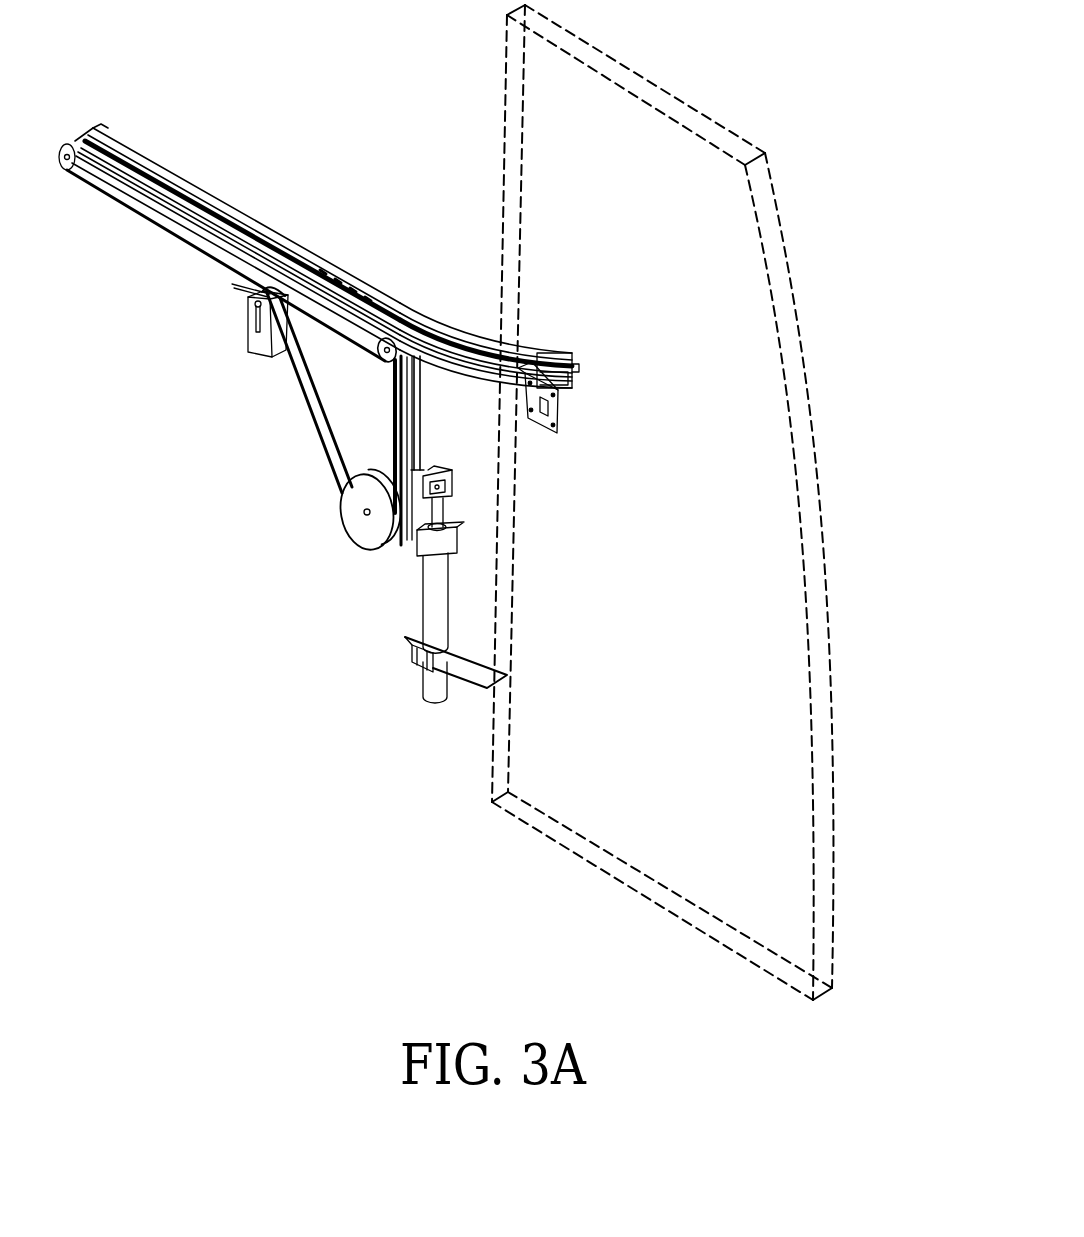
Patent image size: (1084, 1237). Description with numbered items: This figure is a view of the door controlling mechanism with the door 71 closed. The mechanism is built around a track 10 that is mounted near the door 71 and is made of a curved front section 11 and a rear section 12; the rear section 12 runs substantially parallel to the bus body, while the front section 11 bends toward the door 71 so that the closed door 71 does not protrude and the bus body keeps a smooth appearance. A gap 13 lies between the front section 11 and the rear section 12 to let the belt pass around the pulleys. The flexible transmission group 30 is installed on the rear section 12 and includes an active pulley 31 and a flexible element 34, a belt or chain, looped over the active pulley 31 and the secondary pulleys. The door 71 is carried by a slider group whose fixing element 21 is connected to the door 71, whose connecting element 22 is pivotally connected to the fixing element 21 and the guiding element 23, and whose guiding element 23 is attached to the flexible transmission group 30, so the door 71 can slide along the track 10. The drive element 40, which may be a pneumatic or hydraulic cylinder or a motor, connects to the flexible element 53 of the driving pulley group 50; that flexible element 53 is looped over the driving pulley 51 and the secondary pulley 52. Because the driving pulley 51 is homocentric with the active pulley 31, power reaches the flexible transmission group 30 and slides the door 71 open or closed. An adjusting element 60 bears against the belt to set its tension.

The track 10 is at (146, 134).
The curved front section 11 is at (537, 355).
The rear section 12 is at (225, 206).
The gap 13 is at (403, 319).
The fixing element 21 is at (562, 425).
The connecting element 22 is at (447, 327).
The guiding element 23 is at (325, 292).
The flexible transmission group 30 is at (176, 279).
The active pulley 31 is at (347, 510).
The flexible element 34 is at (310, 423).
The drive element 40 is at (433, 688).
The driving pulley group 50 is at (510, 462).
The driving pulley 51 is at (433, 517).
The secondary pulley 52 is at (413, 363).
The flexible element 53 is at (410, 427).
The adjusting element 60 is at (258, 355).
The door 71 is at (593, 853).